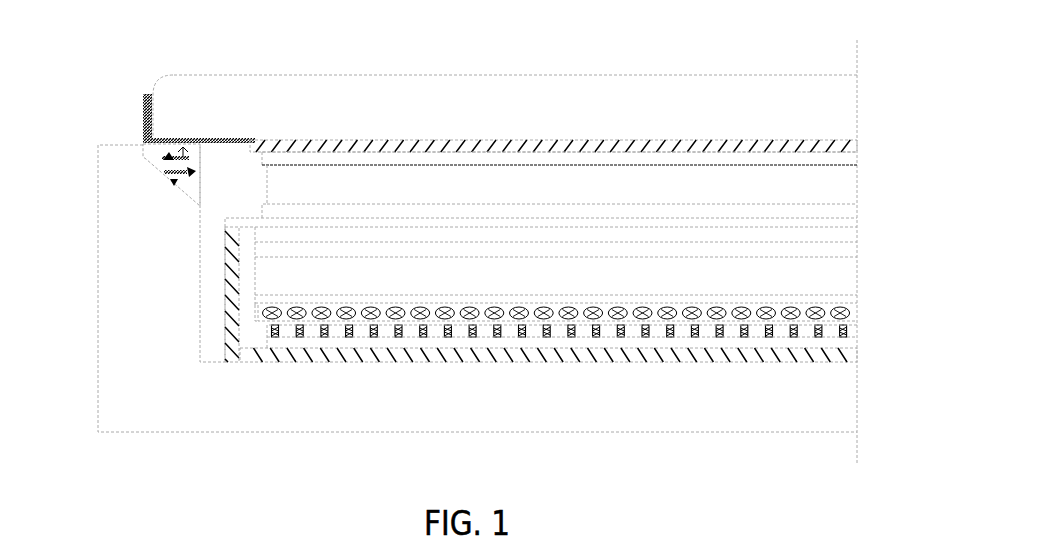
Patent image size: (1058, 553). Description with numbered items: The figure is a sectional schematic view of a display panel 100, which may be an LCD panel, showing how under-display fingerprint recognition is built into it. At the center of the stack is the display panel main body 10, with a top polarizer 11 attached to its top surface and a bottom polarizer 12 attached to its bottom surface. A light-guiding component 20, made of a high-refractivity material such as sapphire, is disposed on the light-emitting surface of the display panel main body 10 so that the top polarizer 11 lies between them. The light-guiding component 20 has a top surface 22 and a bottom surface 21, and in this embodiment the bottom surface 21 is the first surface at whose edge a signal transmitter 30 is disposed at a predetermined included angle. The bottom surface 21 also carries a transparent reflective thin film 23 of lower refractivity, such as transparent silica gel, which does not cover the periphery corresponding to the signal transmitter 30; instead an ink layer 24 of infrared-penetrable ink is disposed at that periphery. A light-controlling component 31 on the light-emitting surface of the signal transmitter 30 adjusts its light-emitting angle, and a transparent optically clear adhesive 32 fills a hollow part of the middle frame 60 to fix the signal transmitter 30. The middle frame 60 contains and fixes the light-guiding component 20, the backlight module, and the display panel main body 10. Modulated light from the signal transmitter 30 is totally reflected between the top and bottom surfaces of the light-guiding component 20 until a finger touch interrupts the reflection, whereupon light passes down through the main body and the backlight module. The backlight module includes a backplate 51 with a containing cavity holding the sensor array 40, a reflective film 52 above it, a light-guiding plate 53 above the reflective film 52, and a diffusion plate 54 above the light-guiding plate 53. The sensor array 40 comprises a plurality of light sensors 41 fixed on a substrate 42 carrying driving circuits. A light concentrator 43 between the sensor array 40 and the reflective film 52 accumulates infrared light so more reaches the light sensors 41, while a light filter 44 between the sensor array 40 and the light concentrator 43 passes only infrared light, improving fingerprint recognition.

The display panel 100 is at (259, 56).
The display panel main body 10 is at (800, 188).
The top polarizer 11 is at (830, 160).
The bottom polarizer 12 is at (830, 213).
The light-guiding component 20 is at (808, 106).
The bottom surface 21 is at (348, 139).
The top surface 22 is at (533, 75).
The transparent reflective thin film 23 is at (857, 147).
The ink layer 24 is at (146, 96).
The signal transmitter 30 is at (143, 152).
The light-controlling component 31 is at (198, 198).
The transparent optically clear adhesive 32 is at (207, 205).
The sensor array 40 is at (903, 335).
The light sensors 41 is at (857, 333).
The substrate 42 is at (835, 344).
The light concentrator 43 is at (857, 313).
The light filter 44 is at (266, 320).
The backplate 51 is at (227, 327).
The reflective film 52 is at (835, 300).
The light-guiding plate 53 is at (835, 270).
The diffusion plate 54 is at (843, 250).
The middle frame 60 is at (153, 395).